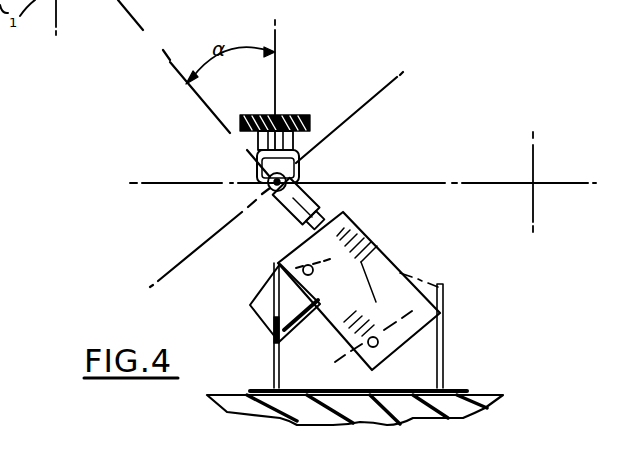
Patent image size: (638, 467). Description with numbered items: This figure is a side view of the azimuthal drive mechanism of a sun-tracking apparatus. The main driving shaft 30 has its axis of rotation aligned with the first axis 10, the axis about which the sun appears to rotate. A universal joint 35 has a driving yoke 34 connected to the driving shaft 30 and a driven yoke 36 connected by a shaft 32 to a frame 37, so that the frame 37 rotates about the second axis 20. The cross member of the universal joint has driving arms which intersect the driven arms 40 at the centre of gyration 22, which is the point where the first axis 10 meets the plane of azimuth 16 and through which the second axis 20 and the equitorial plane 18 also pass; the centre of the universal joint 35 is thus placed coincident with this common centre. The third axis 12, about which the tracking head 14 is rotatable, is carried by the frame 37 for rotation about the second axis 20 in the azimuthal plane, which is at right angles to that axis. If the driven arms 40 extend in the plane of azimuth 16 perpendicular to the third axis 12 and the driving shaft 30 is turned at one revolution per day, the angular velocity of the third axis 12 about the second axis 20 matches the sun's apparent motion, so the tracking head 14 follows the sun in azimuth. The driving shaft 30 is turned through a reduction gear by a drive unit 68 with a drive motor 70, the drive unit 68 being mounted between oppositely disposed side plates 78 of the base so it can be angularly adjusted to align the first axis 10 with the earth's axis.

The first axis 10 is at (176, 64).
The third axis 12 is at (530, 179).
The tracking head 14 is at (536, 157).
The plane of azimuth 16 is at (155, 182).
The equitorial plane 18 is at (182, 258).
The second axis 20 is at (280, 36).
The centre of gyration 22 is at (264, 188).
The main driving shaft 30 is at (325, 218).
The shaft 32 is at (279, 114).
The driving yoke 34 is at (271, 206).
The universal joint 35 is at (306, 169).
The driven yoke 36 is at (294, 140).
The frame 37 is at (297, 114).
The driven arms 40 is at (264, 178).
The drive unit 68 is at (383, 250).
The drive motor 70 is at (258, 314).
The side plates 78 is at (448, 283).